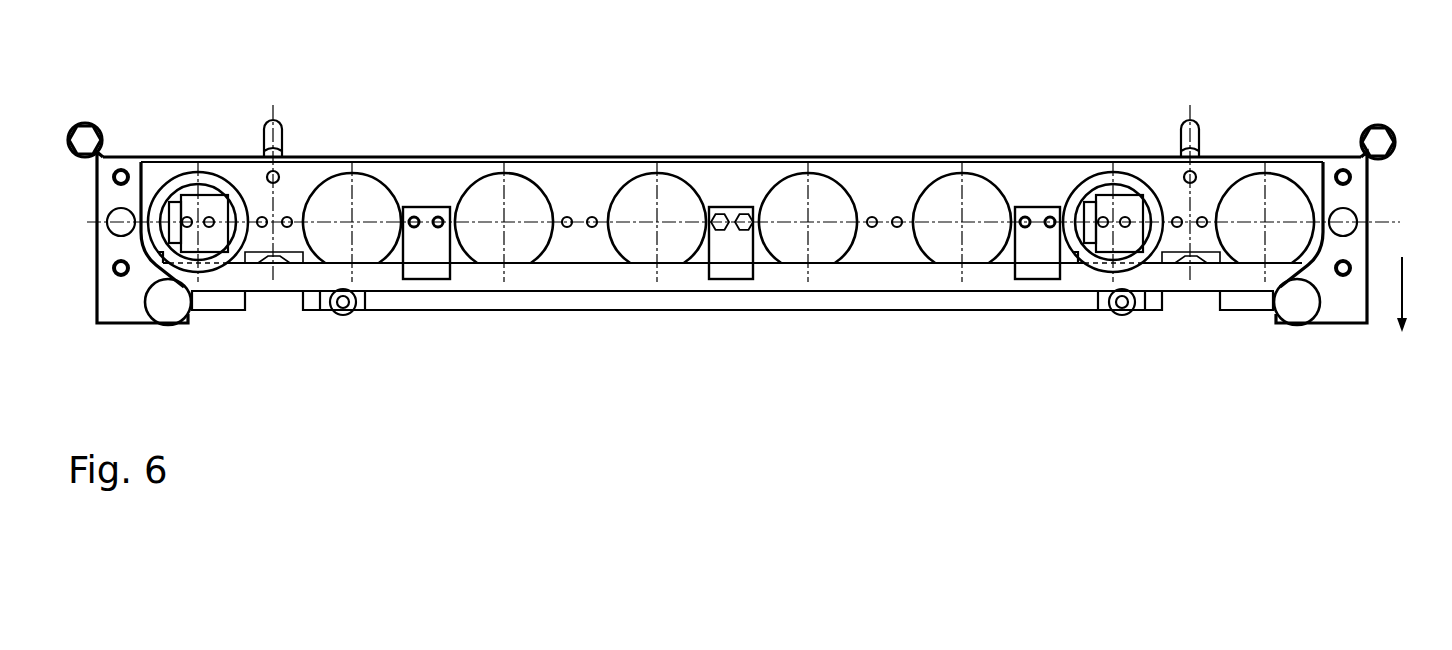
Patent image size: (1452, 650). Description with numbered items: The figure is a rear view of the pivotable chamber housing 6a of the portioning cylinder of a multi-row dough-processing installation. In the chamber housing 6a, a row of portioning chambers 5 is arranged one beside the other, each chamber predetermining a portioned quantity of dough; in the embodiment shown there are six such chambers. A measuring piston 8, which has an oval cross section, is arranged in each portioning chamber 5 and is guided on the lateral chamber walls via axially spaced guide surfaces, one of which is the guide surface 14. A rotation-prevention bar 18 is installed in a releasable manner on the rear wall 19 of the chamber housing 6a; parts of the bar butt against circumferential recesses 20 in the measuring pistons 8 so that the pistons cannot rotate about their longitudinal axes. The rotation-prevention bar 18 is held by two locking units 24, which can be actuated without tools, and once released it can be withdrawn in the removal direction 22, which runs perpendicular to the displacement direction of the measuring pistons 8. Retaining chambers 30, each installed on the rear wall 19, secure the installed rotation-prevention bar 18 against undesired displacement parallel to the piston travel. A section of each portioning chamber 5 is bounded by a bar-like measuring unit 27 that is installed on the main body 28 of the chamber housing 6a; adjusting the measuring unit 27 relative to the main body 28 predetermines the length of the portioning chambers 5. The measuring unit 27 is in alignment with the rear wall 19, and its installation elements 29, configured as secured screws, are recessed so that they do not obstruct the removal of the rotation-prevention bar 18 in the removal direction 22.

The portioning chamber 5 is at (632, 188).
The chamber housing 6a is at (859, 150).
The measuring piston 8 is at (175, 161).
The guide surface 14 is at (207, 203).
The rotation-prevention bar 18 is at (477, 282).
The rear wall 19 is at (328, 157).
The circumferential recess 20 is at (205, 263).
The removal direction 22 is at (1402, 287).
The locking unit 24 is at (168, 305).
The measuring unit 27 is at (618, 302).
The main body 28 is at (717, 157).
The installation element 29 is at (343, 308).
The retaining chamber 30 is at (427, 213).